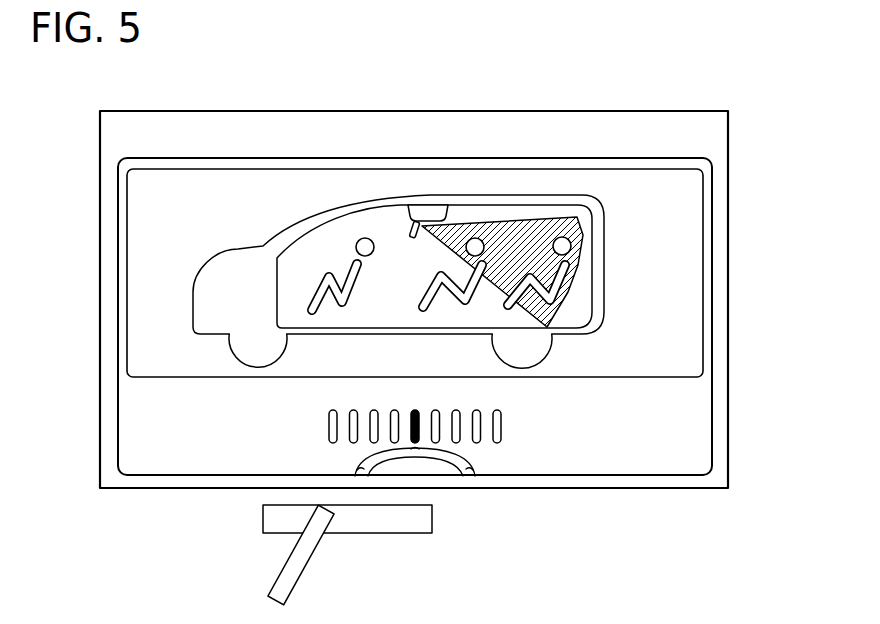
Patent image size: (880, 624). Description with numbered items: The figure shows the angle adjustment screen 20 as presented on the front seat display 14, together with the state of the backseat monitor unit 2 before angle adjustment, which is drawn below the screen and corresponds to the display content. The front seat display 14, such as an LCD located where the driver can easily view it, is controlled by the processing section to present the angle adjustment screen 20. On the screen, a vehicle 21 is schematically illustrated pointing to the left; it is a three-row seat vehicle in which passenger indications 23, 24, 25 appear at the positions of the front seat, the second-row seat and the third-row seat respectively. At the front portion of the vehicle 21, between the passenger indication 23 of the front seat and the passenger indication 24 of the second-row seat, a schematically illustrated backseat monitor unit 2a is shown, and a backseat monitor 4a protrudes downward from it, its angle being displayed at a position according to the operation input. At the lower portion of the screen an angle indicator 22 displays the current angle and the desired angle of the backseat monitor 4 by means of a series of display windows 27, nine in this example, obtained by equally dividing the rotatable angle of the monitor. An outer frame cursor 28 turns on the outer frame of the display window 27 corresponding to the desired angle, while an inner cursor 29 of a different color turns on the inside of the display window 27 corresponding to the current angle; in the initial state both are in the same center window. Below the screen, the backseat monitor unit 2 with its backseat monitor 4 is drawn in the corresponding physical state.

The front seat display 14 is at (603, 107).
The angle adjustment screen 20 is at (337, 126).
The vehicle 21 is at (238, 249).
The passenger indication 23 is at (330, 275).
The passenger indication 24 is at (432, 282).
The passenger indication 25 is at (557, 288).
The backseat monitor unit 2a is at (430, 213).
The backseat monitor 4a is at (413, 225).
The angle indicator 22 is at (510, 405).
The display windows 27 is at (501, 432).
The outer frame cursor 28 is at (420, 438).
The inner cursor 29 is at (412, 446).
The backseat monitor unit 2 is at (358, 523).
The backseat monitor 4 is at (287, 577).